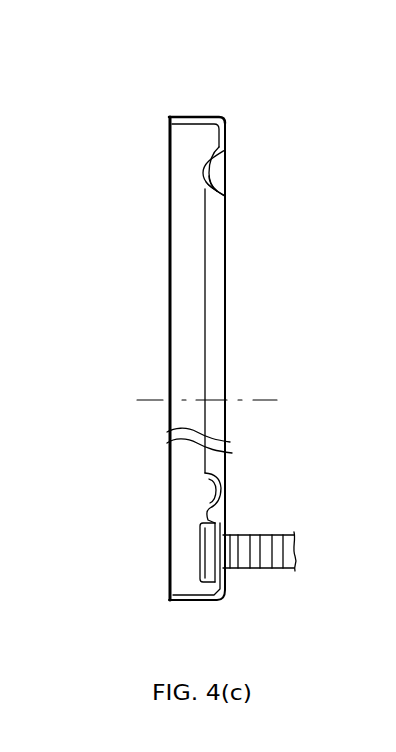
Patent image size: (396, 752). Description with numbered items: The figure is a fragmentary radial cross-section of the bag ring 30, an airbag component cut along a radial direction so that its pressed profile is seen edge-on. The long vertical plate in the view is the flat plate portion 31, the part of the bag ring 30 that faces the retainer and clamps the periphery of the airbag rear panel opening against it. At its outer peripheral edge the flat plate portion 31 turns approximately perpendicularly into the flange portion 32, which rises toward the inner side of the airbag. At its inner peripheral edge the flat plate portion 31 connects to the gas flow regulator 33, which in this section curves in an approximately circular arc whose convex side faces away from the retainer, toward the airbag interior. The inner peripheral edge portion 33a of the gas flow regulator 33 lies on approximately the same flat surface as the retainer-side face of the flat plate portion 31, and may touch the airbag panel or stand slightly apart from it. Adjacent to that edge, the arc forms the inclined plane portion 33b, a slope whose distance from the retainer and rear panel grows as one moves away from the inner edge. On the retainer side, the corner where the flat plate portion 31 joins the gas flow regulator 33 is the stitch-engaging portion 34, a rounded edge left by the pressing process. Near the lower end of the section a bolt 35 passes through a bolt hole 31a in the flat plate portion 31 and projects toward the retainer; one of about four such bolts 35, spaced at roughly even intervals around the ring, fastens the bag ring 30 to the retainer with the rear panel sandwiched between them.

The bag ring 30 is at (209, 343).
The flat plate portion 31 is at (218, 141).
The bolt hole 31a is at (224, 535).
The flange portion 32 is at (188, 117).
The gas flow regulator 33 is at (136, 210).
The inner peripheral edge portion 33a is at (226, 194).
The inclined plane portion 33b is at (216, 190).
The stitch-engaging portion 34 is at (225, 158).
The bolt 35 is at (277, 568).